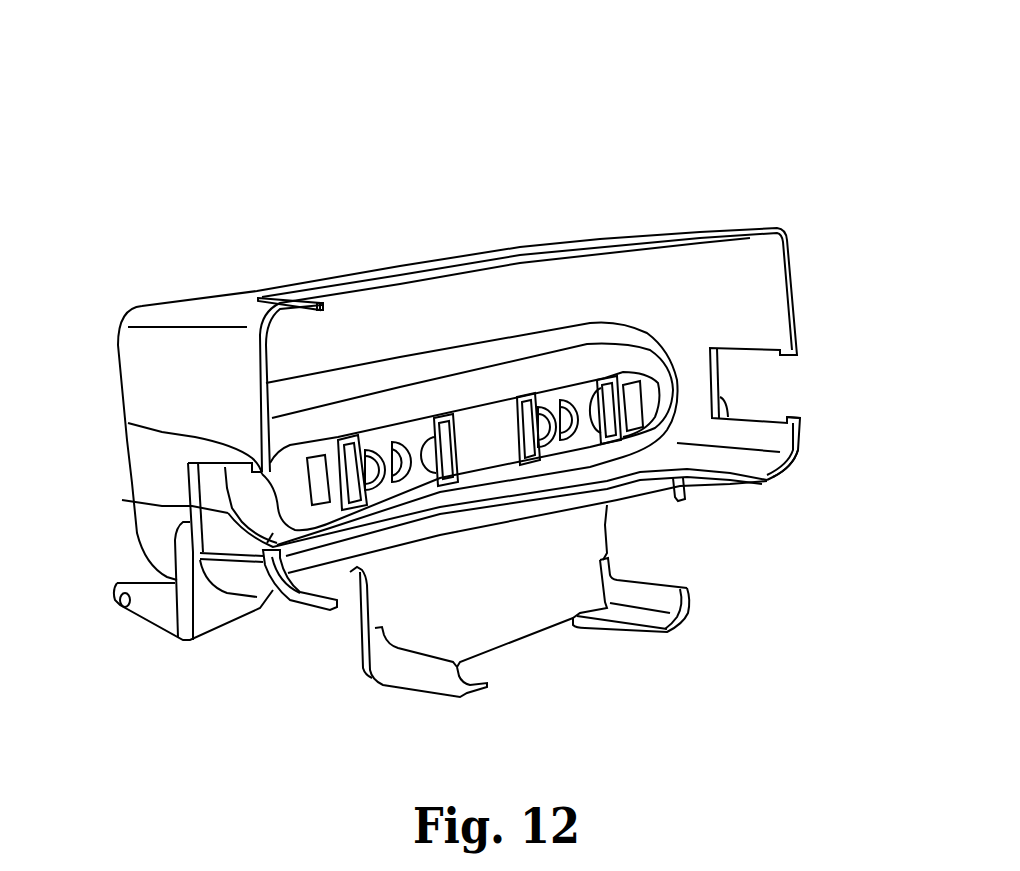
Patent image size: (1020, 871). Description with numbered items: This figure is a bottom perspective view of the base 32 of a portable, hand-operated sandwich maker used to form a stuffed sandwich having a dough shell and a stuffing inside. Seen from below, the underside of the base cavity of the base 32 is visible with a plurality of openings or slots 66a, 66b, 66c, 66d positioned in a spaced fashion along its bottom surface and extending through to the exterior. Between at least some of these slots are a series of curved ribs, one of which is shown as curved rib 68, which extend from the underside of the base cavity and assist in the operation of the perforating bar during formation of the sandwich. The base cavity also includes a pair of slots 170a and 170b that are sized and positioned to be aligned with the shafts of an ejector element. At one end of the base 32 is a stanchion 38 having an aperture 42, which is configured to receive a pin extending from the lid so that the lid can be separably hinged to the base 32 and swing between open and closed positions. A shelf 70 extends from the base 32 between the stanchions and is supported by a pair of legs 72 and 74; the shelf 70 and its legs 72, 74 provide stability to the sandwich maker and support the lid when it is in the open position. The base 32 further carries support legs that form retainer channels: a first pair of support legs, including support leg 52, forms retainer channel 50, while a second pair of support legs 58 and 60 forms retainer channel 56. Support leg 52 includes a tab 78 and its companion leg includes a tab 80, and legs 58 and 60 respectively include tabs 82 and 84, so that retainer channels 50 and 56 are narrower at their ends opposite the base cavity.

The base 32 is at (652, 113).
The stanchion 38 is at (162, 620).
The aperture 42 is at (123, 603).
The retainer channel 50 is at (122, 500).
The support leg 52 is at (200, 318).
The retainer channel 56 is at (777, 390).
The support leg 58 is at (797, 255).
The support leg 60 is at (793, 463).
The slot 66a is at (345, 437).
The slot 66b is at (450, 413).
The slot 66c is at (530, 397).
The slot 66d is at (605, 378).
The curved rib 68 is at (400, 443).
The shelf 70 is at (598, 530).
The leg 72 is at (467, 700).
The leg 74 is at (690, 625).
The tab 78 is at (268, 565).
The tab 80 is at (128, 423).
The tab 82 is at (787, 358).
The tab 84 is at (800, 413).
The slot 170a is at (330, 452).
The slot 170b is at (668, 412).